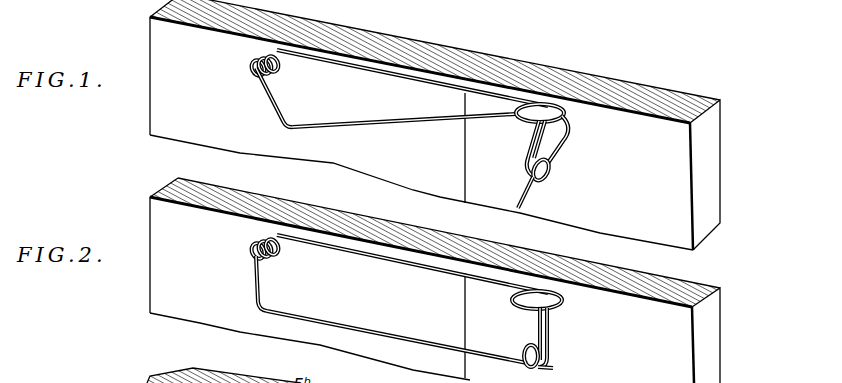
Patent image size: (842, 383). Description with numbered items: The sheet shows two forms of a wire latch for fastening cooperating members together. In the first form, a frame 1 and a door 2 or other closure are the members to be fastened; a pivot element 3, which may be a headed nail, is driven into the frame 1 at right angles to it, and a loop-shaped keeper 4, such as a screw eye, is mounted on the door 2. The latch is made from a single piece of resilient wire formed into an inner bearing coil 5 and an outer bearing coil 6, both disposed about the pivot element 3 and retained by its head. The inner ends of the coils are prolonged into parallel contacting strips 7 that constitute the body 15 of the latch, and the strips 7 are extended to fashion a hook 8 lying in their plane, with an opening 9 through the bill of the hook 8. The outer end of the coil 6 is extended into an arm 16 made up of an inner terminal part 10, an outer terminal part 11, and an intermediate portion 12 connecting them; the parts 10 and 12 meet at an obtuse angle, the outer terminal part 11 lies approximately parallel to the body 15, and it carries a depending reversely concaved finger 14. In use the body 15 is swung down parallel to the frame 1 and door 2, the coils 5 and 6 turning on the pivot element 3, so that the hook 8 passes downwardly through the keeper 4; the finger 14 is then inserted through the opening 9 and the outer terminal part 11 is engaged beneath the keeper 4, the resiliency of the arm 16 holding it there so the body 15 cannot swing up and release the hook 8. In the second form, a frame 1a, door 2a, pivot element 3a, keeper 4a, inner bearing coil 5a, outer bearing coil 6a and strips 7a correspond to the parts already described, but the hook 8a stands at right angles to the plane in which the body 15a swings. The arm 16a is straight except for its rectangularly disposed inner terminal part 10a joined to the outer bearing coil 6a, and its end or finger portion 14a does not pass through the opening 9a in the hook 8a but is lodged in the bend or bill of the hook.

In FIG. 1, the frame 1 is at (168, 105).
In FIG. 1, the door 2 is at (712, 166).
In FIG. 1, the pivot element 3 is at (256, 72).
In FIG. 1, the keeper 4 is at (563, 107).
In FIG. 1, the inner bearing coil 5 is at (303, 48).
In FIG. 1, the outer bearing coil 6 is at (270, 72).
In FIG. 1, the parallel contacting strips 7 is at (372, 58).
In FIG. 1, the hook 8 is at (526, 148).
In FIG. 1, the opening 9 is at (538, 182).
In FIG. 1, the inner terminal part 10 is at (274, 106).
In FIG. 1, the outer terminal part 11 is at (562, 120).
In FIG. 1, the intermediate portion 12 is at (427, 119).
In FIG. 1, the finger 14 is at (567, 141).
In FIG. 1, the body 15 is at (501, 91).
In FIG. 1, the arm 16 is at (360, 126).
In FIG. 2, the frame 1a is at (163, 265).
In FIG. 2, the door 2a is at (713, 347).
In FIG. 2, the pivot element 3a is at (253, 250).
In FIG. 2, the keeper 4a is at (555, 306).
In FIG. 2, the inner bearing coil 5a is at (287, 227).
In FIG. 2, the outer bearing coil 6a is at (271, 254).
In FIG. 2, the parallel contacting strips 7a is at (363, 254).
In FIG. 2, the hook 8a is at (536, 325).
In FIG. 2, the opening 9a is at (524, 360).
In FIG. 2, the inner terminal part 10a is at (255, 280).
In FIG. 2, the finger portion 14a is at (555, 364).
In FIG. 2, the body 15a is at (413, 258).
In FIG. 2, the arm 16a is at (405, 334).